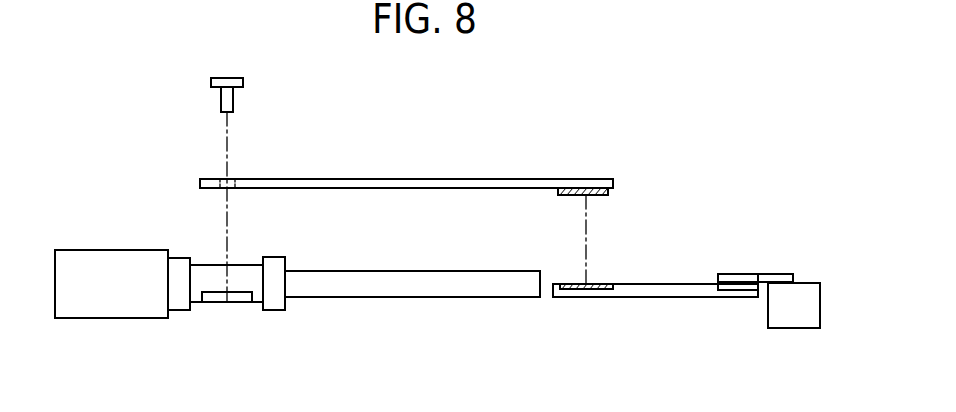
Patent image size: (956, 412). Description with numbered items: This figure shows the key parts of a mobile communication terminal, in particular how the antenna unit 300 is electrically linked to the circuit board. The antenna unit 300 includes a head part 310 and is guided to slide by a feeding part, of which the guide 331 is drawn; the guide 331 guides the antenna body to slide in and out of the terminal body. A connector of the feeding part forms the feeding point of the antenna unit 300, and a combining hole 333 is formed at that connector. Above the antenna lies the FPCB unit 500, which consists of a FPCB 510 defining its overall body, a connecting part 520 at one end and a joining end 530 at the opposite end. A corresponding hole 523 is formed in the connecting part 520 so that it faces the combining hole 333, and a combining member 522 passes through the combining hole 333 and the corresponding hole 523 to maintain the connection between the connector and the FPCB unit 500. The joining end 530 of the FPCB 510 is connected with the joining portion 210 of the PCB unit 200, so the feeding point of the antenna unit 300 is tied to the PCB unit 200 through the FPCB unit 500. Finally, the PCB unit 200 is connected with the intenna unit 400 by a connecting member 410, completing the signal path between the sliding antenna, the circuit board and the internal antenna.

The PCB unit 200 is at (660, 314).
The joining portion 210 is at (582, 290).
The antenna unit 300 is at (313, 323).
The head part 310 is at (108, 310).
The guide 331 is at (275, 308).
The combining hole 333 is at (228, 308).
The intenna unit 400 is at (797, 346).
The connecting member 410 is at (760, 278).
The FPCB unit 500 is at (350, 144).
The FPCB 510 is at (436, 187).
The connecting part 520 is at (174, 186).
The combining member 522 is at (225, 81).
The corresponding hole 523 is at (228, 178).
The joining end 530 is at (597, 188).